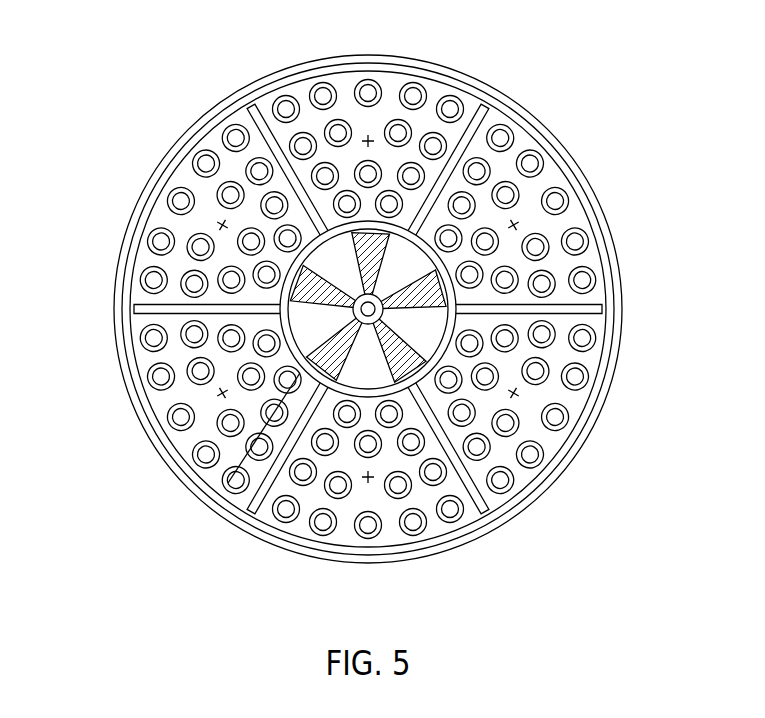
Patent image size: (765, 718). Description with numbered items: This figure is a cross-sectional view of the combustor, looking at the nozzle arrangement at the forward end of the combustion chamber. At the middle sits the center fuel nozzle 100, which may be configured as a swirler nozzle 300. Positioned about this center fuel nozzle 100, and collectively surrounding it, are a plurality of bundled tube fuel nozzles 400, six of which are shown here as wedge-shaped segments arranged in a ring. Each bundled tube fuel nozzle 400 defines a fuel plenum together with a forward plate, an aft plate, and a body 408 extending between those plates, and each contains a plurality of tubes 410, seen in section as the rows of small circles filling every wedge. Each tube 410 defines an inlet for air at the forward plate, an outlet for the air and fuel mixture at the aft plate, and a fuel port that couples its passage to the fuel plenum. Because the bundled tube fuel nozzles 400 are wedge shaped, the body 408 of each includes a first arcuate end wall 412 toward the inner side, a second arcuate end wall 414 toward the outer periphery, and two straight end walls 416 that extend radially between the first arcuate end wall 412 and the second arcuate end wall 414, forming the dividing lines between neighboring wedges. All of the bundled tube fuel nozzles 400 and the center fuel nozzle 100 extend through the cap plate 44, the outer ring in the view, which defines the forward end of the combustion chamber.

The cap plate 44 is at (492, 84).
The center fuel nozzle 100 is at (264, 92).
The swirler nozzle 300 is at (382, 232).
The bundled tube fuel nozzle 400 is at (306, 76).
The body 408 is at (198, 470).
The tube 410 is at (594, 283).
The first arcuate end wall 412 is at (228, 483).
The second arcuate end wall 414 is at (140, 398).
The straight end wall 416 is at (172, 313).